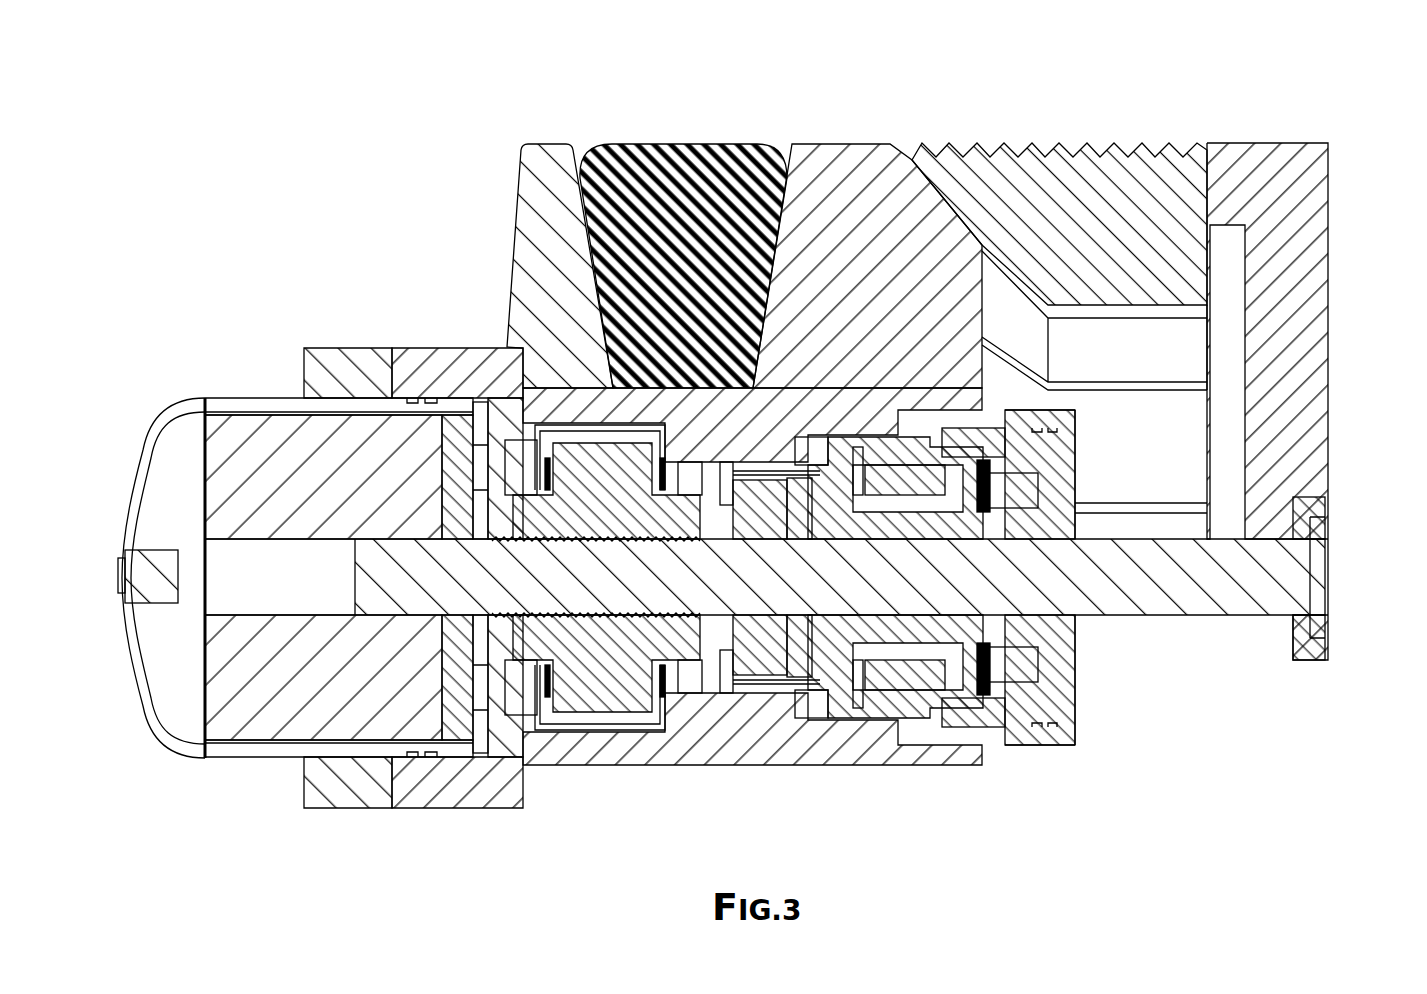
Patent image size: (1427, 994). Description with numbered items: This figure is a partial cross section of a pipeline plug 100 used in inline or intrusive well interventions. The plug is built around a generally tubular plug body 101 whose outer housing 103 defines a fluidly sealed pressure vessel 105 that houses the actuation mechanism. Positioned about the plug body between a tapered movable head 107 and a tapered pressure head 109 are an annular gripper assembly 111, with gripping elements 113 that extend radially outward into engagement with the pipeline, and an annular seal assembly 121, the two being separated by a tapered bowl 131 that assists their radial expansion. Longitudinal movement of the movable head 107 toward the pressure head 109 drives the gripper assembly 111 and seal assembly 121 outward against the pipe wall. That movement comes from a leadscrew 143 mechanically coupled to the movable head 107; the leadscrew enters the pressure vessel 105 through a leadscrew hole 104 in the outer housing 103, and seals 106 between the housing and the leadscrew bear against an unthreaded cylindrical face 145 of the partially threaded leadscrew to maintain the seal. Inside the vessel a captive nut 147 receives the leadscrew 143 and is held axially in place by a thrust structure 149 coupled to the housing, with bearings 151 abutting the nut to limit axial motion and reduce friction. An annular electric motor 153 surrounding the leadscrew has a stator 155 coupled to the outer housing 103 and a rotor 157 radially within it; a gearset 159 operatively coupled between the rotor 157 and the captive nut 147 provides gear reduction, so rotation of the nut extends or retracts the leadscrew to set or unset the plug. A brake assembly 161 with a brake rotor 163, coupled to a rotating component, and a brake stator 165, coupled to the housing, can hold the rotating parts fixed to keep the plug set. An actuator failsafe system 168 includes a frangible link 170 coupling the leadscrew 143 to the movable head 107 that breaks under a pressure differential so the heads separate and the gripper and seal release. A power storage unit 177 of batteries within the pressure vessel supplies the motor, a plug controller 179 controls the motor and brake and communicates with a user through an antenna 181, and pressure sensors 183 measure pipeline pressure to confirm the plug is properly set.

The pipeline plug 100 is at (197, 120).
The plug body 101 is at (178, 385).
The outer housing 103 is at (440, 790).
The leadscrew hole 104 is at (1036, 626).
The pressure vessel 105 is at (183, 690).
The seals 106 is at (1068, 621).
The movable head 107 is at (1294, 132).
The pressure head 109 is at (518, 150).
The gripper assembly 111 is at (1096, 126).
The gripping elements 113 is at (1141, 168).
The seal assembly 121 is at (697, 130).
The bowl 131 is at (835, 145).
The leadscrew 143 is at (1250, 616).
The cylindrical face 145 is at (1180, 616).
The captive nut 147 is at (598, 705).
The thrust structure 149 is at (525, 715).
The bearings 151 is at (546, 700).
The electric motor 153 is at (880, 725).
The stator 155 is at (906, 692).
The rotor 157 is at (936, 692).
The gearset 159 is at (780, 655).
The brake assembly 161 is at (1015, 705).
The brake rotor 163 is at (1038, 670).
The brake stator 165 is at (996, 672).
The actuator failsafe system 168 is at (1348, 600).
The frangible link 170 is at (1313, 558).
The power storage unit 177 is at (245, 478).
The plug controller 179 is at (460, 395).
The antenna 181 is at (195, 500).
The pressure sensors 183 is at (255, 385).